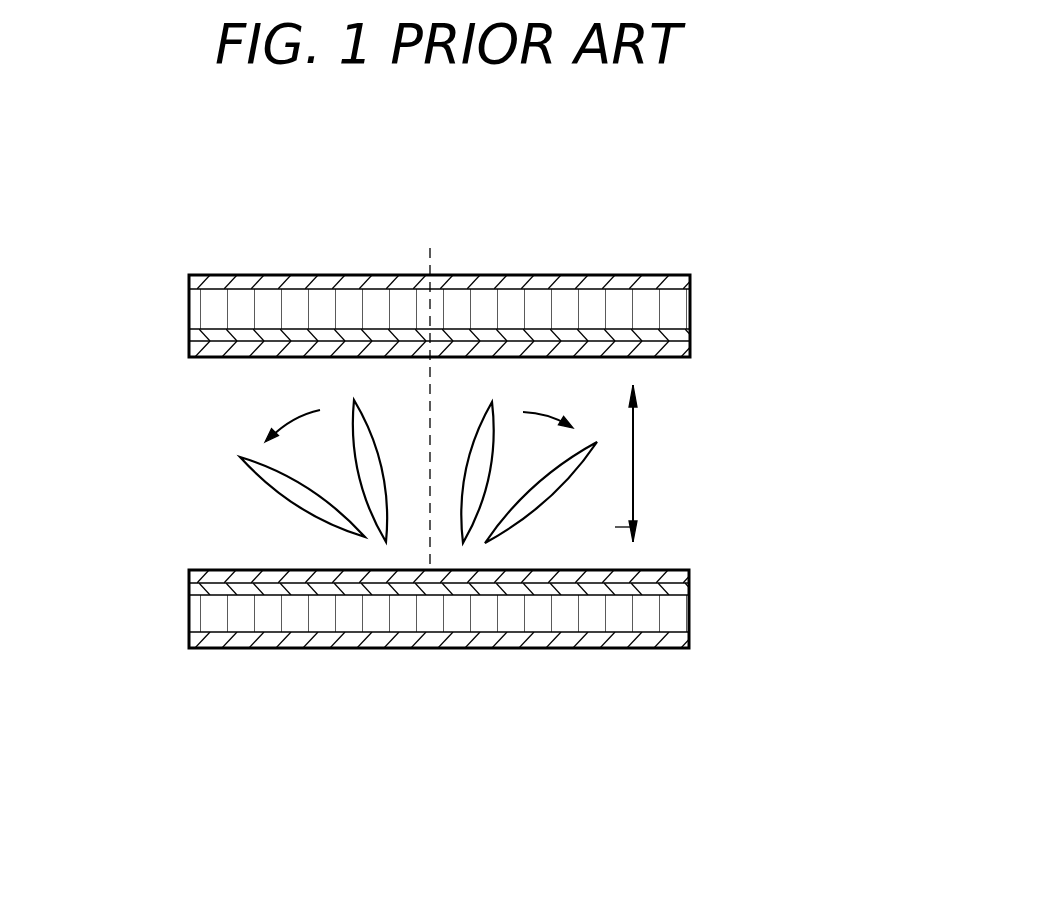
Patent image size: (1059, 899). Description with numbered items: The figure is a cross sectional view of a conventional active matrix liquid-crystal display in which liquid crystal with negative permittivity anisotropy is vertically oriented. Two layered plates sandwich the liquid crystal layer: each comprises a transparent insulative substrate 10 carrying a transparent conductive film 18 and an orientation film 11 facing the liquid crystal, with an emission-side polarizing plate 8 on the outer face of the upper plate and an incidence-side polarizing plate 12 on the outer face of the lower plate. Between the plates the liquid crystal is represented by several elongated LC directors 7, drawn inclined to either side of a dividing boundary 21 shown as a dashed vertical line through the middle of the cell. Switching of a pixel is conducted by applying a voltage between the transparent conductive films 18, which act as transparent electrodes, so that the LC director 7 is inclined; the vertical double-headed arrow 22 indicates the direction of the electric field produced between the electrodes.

The LC director 7 is at (467, 553).
The emission-side polarizing plate 8 is at (541, 289).
The transparent insulative substrate 10 is at (678, 310).
The orientation film 11 is at (208, 356).
The incidence-side polarizing plate 12 is at (573, 640).
The transparent conductive film 18 is at (690, 339).
The dividing boundary 21 is at (430, 255).
The direction of electric field 22 is at (638, 477).